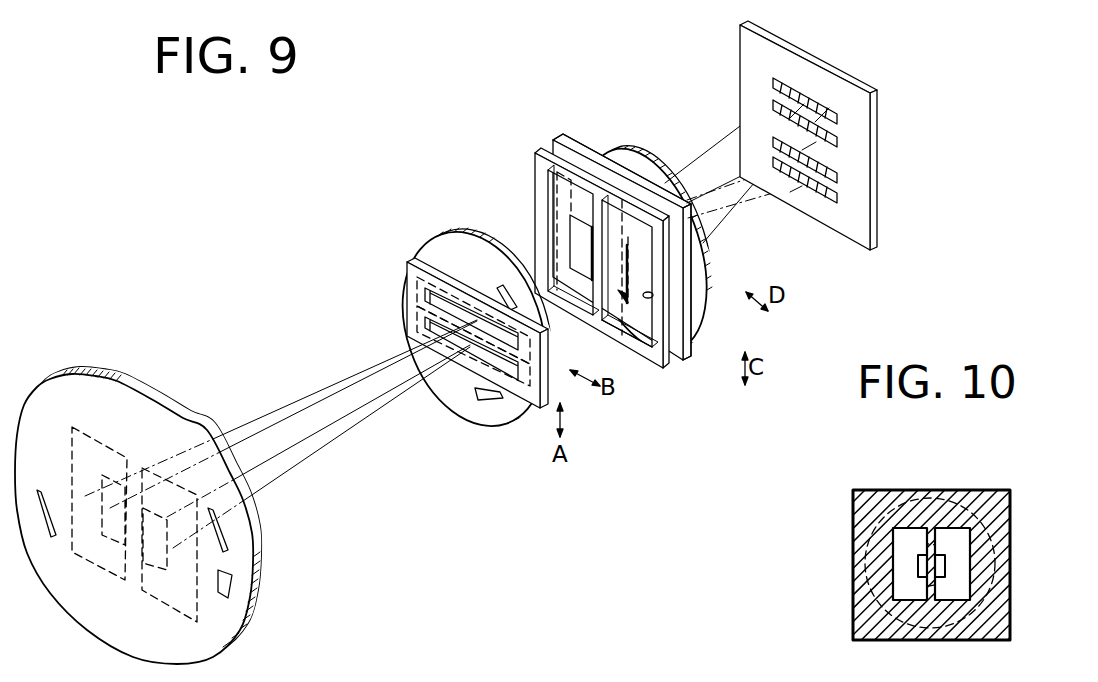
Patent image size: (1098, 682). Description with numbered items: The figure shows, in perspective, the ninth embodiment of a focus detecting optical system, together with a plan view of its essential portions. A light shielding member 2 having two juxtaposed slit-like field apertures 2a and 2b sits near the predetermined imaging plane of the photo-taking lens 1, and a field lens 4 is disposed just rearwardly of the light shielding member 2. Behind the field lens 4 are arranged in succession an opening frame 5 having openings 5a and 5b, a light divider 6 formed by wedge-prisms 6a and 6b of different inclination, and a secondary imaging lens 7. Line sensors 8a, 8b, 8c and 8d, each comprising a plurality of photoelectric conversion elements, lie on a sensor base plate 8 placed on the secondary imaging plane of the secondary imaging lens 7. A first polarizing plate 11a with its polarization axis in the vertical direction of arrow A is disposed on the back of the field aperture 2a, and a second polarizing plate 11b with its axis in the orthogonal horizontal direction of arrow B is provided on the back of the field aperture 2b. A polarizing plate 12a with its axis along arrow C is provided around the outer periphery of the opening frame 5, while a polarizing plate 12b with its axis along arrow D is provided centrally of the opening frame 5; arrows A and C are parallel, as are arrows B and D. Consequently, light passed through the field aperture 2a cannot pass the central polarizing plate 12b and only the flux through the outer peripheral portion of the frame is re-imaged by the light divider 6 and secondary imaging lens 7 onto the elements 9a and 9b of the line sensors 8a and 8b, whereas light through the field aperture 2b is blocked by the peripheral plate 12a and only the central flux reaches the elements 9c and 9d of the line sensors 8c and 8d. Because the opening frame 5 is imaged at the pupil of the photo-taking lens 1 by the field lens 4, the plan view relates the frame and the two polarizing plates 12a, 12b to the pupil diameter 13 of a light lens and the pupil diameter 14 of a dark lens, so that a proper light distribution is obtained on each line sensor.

In FIG. 9, the photo-taking lens 1 is at (115, 373).
In FIG. 9, the light shielding member 2 is at (483, 362).
In FIG. 9, the field aperture 2a is at (425, 322).
In FIG. 9, the field aperture 2b is at (425, 295).
In FIG. 9, the field lens 4 is at (445, 252).
In FIG. 9, the opening frame 5 is at (621, 279).
In FIG. 10, the opening frame 5 is at (978, 495).
In FIG. 9, the opening 5a is at (538, 217).
In FIG. 9, the opening 5b is at (652, 296).
In FIG. 9, the light divider 6 is at (615, 231).
In FIG. 9, the wedge-prism 6a is at (558, 145).
In FIG. 9, the wedge-prism 6b is at (680, 338).
In FIG. 9, the secondary imaging lens 7 is at (630, 150).
In FIG. 9, the sensor base plate 8 is at (801, 137).
In FIG. 9, the line sensor 8a is at (773, 83).
In FIG. 9, the line sensor 8b is at (773, 105).
In FIG. 9, the line sensor 8c is at (840, 178).
In FIG. 9, the line sensor 8d is at (838, 200).
In FIG. 9, the element 9a is at (797, 110).
In FIG. 9, the element 9b is at (823, 116).
In FIG. 9, the element 9c is at (810, 147).
In FIG. 9, the element 9d is at (795, 190).
In FIG. 9, the first polarizing plate 11a is at (530, 390).
In FIG. 9, the second polarizing plate 11b is at (532, 348).
In FIG. 9, the polarizing plate 12a is at (643, 330).
In FIG. 10, the polarizing plate 12a is at (957, 535).
In FIG. 9, the polarizing plate 12b is at (628, 253).
In FIG. 10, the polarizing plate 12b is at (942, 567).
In FIG. 10, the pupil diameter of a light photo-taking lens 13 is at (907, 508).
In FIG. 10, the pupil diameter of a dark photo-taking lens 14 is at (952, 564).